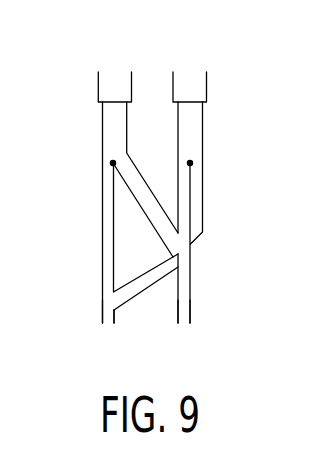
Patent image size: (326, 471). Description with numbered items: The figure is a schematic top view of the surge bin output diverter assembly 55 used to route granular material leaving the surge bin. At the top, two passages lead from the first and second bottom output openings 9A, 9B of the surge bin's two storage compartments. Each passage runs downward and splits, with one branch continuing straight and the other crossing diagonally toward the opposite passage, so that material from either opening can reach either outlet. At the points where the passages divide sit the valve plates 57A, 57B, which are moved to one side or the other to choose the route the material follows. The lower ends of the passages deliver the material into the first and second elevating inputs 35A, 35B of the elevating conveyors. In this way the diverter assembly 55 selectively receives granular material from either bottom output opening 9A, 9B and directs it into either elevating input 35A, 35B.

The surge bin output diverter assembly 55 is at (88, 231).
The first bottom output opening 9A is at (112, 80).
The second bottom output opening 9B is at (190, 80).
The valve plate 57B is at (113, 163).
The valve plate 57A is at (190, 163).
The first elevating input 35A is at (126, 363).
The second elevating input 35B is at (201, 363).